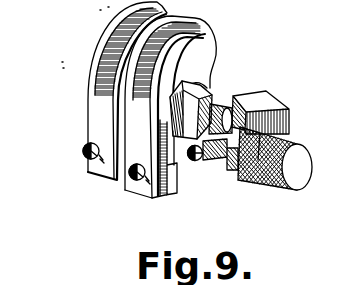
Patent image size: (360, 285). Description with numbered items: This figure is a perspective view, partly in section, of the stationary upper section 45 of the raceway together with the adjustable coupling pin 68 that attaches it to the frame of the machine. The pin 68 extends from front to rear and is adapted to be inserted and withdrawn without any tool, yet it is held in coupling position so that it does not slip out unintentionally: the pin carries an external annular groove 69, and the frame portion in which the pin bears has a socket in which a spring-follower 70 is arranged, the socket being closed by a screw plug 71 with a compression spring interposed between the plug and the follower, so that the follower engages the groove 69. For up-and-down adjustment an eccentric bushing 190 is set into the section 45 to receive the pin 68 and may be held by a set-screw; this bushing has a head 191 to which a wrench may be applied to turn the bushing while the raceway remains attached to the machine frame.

The raceway section 45 is at (90, 95).
The eccentric bushing 190 is at (183, 90).
The head 191 is at (200, 91).
The external annular groove 69 is at (222, 103).
The spring-follower 70 is at (262, 134).
The coupling pin 68 is at (265, 180).
The screw plug 71 is at (197, 161).